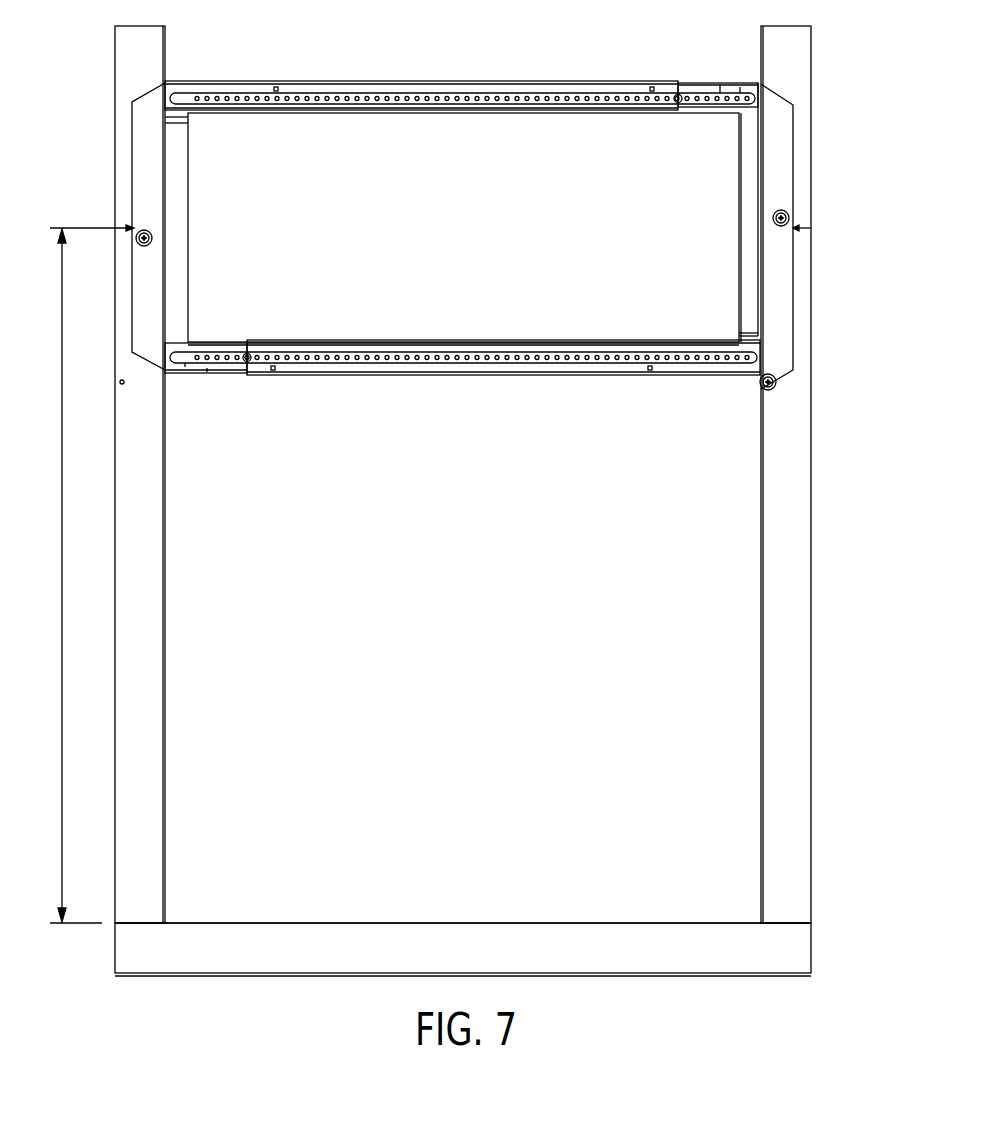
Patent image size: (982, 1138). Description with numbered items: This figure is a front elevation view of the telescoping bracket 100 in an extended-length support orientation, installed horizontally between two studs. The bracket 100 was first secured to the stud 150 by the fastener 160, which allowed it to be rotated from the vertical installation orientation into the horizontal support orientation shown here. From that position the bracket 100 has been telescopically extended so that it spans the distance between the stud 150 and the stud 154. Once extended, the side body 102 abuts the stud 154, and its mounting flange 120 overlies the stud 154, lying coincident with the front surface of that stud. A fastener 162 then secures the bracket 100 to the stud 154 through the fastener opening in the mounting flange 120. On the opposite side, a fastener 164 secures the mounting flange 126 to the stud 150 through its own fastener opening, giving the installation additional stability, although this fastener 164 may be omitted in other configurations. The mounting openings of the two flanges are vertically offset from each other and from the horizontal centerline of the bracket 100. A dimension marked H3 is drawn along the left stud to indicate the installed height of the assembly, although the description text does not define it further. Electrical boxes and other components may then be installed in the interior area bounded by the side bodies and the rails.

The bracket 100 is at (484, 63).
The side body 102 is at (178, 198).
The mounting flange 120 is at (150, 358).
The mounting flange 126 is at (775, 100).
The stud 150 is at (800, 290).
The stud 154 is at (165, 462).
The fastener 160 is at (762, 389).
The fastener 162 is at (152, 243).
The fastener 164 is at (773, 213).
The mounting height dimension H3 is at (91, 574).